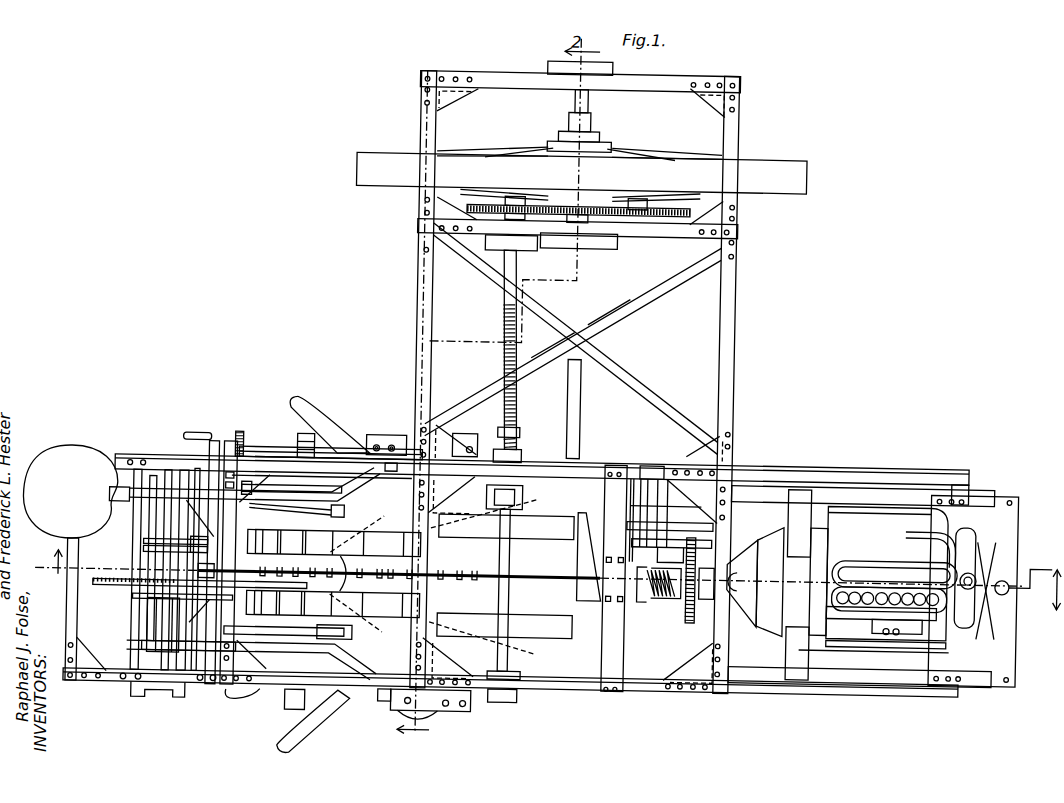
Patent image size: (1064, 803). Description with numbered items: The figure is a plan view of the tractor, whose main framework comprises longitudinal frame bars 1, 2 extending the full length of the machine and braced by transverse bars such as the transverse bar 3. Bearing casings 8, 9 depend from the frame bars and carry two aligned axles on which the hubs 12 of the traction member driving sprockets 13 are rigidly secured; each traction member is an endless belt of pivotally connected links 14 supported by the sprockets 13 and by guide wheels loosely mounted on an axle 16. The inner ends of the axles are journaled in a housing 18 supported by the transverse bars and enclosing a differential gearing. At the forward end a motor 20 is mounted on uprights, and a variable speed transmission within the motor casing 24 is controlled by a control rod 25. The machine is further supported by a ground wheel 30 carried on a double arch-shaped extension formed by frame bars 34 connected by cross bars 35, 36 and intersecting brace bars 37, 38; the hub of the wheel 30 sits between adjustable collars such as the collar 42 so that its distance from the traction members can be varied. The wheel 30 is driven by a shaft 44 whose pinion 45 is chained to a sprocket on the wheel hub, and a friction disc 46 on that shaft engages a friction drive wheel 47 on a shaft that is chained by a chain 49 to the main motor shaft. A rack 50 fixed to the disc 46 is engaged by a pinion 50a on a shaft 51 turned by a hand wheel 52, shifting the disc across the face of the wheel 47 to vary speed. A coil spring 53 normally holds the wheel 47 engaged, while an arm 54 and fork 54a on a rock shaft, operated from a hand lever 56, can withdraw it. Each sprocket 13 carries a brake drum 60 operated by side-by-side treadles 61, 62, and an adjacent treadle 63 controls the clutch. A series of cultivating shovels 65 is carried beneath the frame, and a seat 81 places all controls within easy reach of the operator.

The longitudinal frame bar 1 is at (160, 460).
The longitudinal frame bar 2 is at (175, 692).
The transverse bar 3 is at (51, 562).
The bearing casing 8 is at (470, 712).
The bearing casing 9 is at (397, 438).
The hub 12 is at (398, 472).
The traction member driving sprocket 13 is at (340, 537).
The link 14 is at (300, 537).
The axle 16 is at (88, 604).
The housing 18 is at (455, 605).
The motor 20 is at (876, 560).
The motor casing 24 is at (765, 606).
The control rod 25 is at (200, 577).
The ground wheel 30 is at (765, 168).
The frame bar 34 is at (412, 358).
The cross bar 35 is at (666, 236).
The cross bar 36 is at (659, 84).
The brace bar 37 is at (654, 298).
The brace bar 38 is at (475, 280).
The collar 42 is at (583, 131).
The shaft 44 is at (521, 252).
The pinion 45 is at (495, 205).
The friction disc 46 is at (525, 518).
The friction drive wheel 47 is at (583, 524).
The chain 49 is at (700, 512).
The rack 50 is at (500, 361).
The pinion 50a is at (518, 460).
The shaft 51 is at (581, 108).
The hand wheel 52 is at (209, 438).
The coil spring 53 is at (691, 622).
The arm 54 is at (660, 545).
The fork 54a is at (646, 470).
The hand lever 56 is at (190, 548).
The brake drum 60 is at (350, 502).
The brake treadle 61 is at (242, 517).
The brake treadle 62 is at (255, 495).
The clutch treadle 63 is at (242, 438).
The cultivating shovel 65 is at (321, 420).
The seat 81 is at (75, 452).